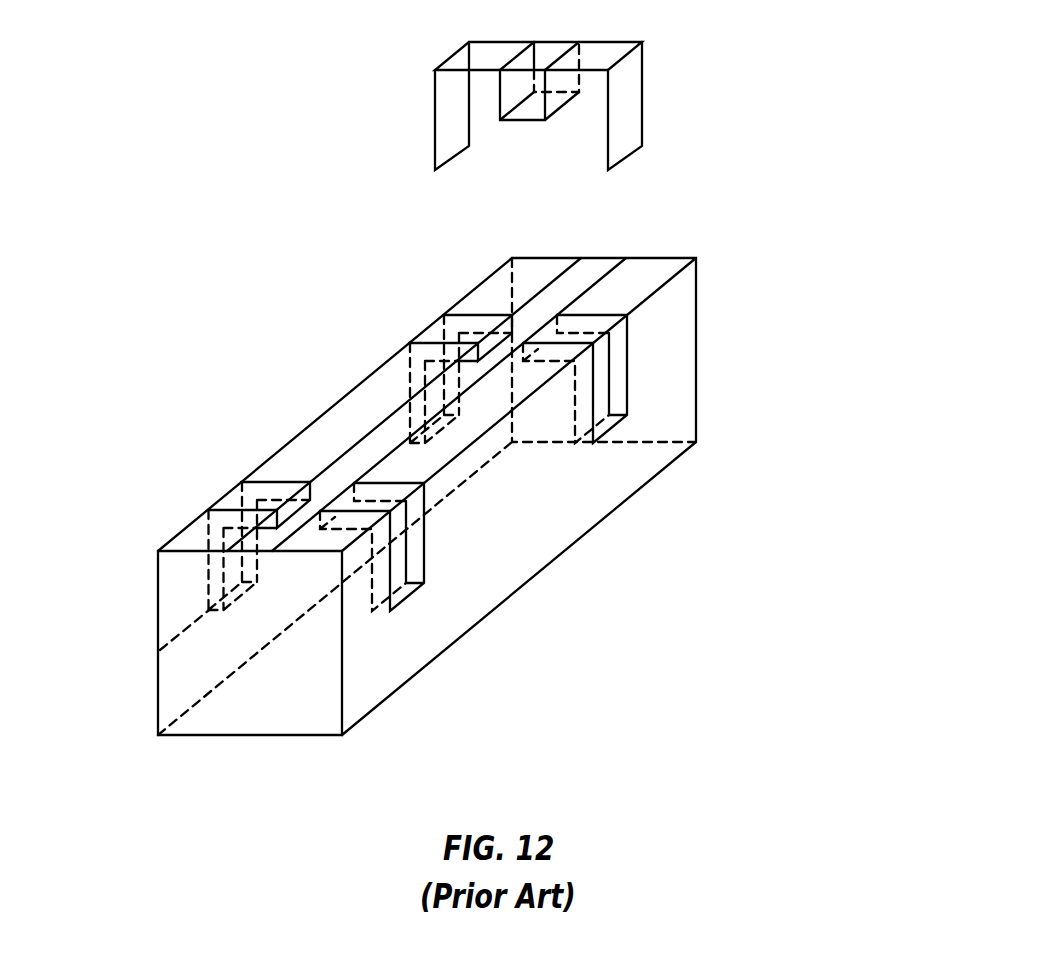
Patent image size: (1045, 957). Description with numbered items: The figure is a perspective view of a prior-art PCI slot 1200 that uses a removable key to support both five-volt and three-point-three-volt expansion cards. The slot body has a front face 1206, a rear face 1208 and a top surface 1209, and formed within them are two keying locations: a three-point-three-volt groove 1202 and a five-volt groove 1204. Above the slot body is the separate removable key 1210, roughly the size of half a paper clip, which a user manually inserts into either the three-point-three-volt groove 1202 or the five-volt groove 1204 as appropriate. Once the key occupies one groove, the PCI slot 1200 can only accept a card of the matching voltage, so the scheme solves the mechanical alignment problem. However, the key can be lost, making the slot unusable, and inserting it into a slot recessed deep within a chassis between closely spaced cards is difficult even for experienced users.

The PCI slot 1200 is at (807, 621).
The 3.3V groove 1202 is at (366, 497).
The 5V groove 1204 is at (725, 205).
The front face 1206 is at (480, 718).
The rear face 1208 is at (100, 682).
The top surface 1209 is at (380, 405).
The removable key 1210 is at (687, 53).